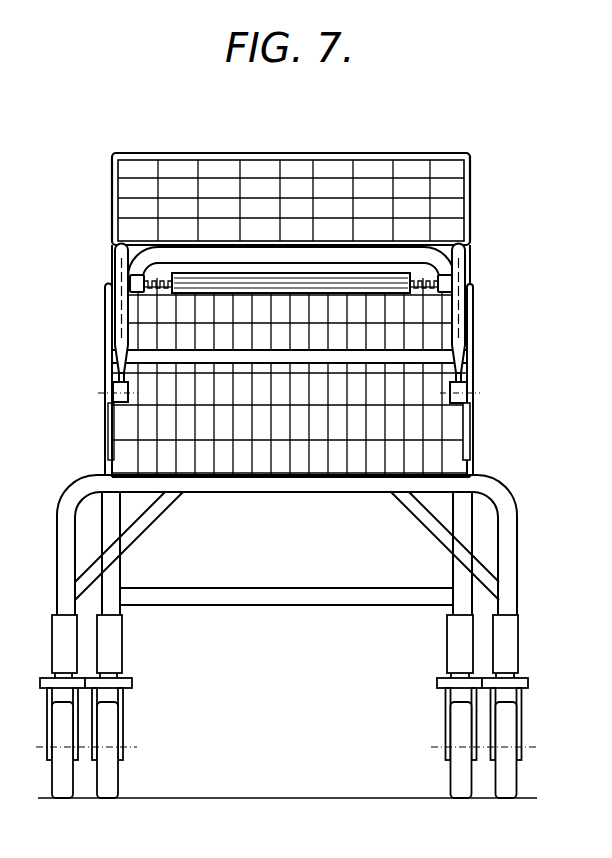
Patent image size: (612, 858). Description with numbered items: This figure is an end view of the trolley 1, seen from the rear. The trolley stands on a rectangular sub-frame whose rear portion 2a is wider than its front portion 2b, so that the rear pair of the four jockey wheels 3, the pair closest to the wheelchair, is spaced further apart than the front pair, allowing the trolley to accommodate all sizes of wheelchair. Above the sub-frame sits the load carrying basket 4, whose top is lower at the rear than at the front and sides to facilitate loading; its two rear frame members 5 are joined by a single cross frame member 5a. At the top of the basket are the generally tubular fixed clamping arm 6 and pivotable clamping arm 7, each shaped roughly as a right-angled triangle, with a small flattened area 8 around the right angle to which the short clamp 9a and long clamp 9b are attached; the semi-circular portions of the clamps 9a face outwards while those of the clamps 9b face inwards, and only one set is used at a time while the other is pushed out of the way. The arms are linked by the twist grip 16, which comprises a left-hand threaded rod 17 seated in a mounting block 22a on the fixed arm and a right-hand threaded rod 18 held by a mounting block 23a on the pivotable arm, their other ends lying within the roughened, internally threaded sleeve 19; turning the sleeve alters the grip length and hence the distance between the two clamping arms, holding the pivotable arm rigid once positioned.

The trolley 1 is at (523, 562).
The rear portion of the sub-frame 2a is at (509, 510).
The front portion of the sub-frame 2b is at (107, 517).
The jockey wheels 3 is at (105, 728).
The load carrying basket 4 is at (473, 171).
The rear frame members 5 is at (474, 301).
The cross frame member 5a is at (456, 373).
The fixed clamping arm 6 is at (113, 312).
The pivotable clamping arm 7 is at (465, 328).
The flattened area 8 is at (118, 380).
The short clamp 9a is at (468, 396).
The long clamp 9b is at (472, 429).
The shaft 16 is at (252, 273).
The screw-threaded rod 17 is at (151, 277).
The screw-threaded rod 18 is at (431, 258).
The sleeve 19 is at (336, 282).
The mounting block 22a is at (130, 283).
The mounting block 23a is at (451, 284).